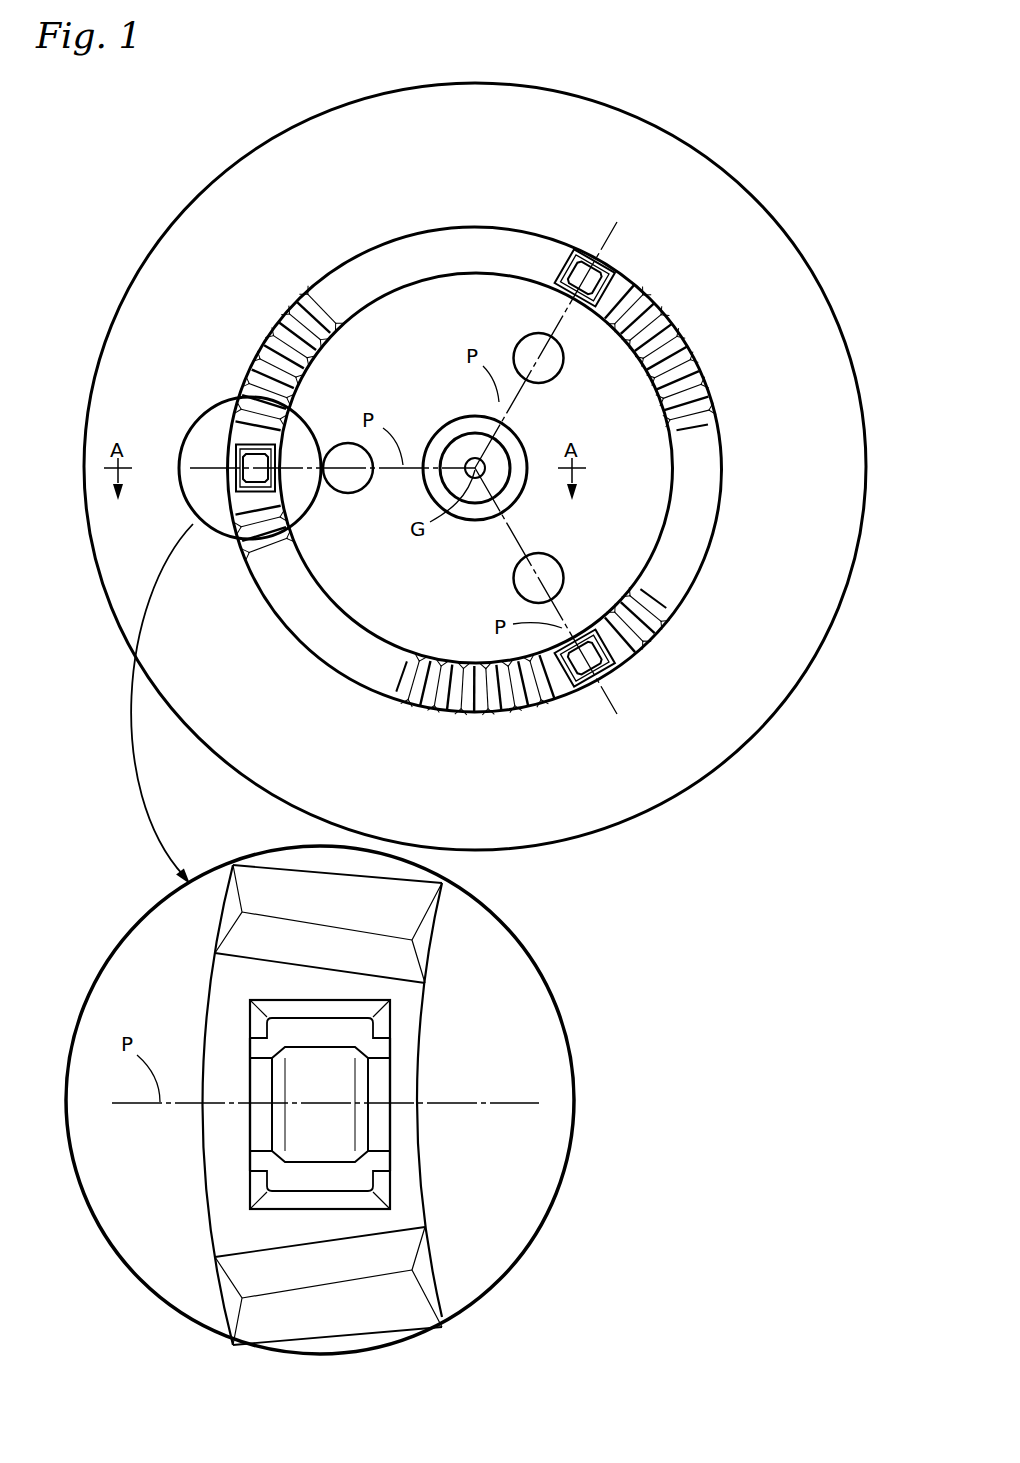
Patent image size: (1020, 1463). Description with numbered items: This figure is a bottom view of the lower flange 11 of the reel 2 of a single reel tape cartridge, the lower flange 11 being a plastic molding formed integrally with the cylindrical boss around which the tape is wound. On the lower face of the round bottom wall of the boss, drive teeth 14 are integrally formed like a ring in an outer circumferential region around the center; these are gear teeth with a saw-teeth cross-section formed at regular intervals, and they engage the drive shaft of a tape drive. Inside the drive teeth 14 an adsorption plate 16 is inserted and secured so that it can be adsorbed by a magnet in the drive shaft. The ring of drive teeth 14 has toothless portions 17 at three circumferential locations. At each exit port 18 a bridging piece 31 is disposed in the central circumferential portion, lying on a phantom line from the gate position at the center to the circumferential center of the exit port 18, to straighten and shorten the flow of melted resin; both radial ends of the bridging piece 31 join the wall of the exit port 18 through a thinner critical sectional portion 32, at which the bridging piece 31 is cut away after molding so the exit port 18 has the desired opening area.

The reel 2 is at (798, 214).
The lower flange 11 is at (808, 300).
The drive teeth 14 is at (675, 367).
The adsorption plate 16 is at (653, 478).
The toothless portions 17 is at (582, 250).
The exit port 18 is at (612, 296).
The bridging piece 31 is at (590, 263).
The critical sectional portion 32 is at (260, 1127).